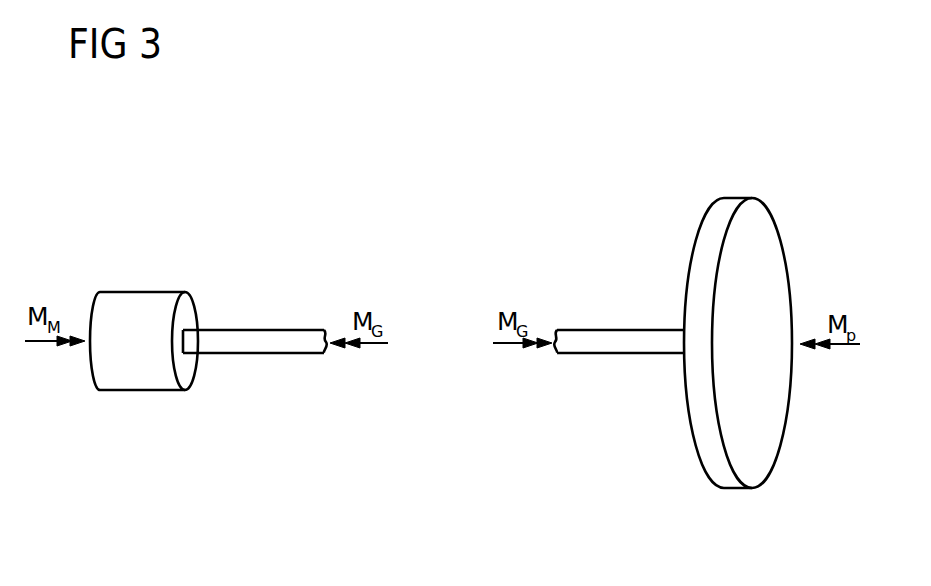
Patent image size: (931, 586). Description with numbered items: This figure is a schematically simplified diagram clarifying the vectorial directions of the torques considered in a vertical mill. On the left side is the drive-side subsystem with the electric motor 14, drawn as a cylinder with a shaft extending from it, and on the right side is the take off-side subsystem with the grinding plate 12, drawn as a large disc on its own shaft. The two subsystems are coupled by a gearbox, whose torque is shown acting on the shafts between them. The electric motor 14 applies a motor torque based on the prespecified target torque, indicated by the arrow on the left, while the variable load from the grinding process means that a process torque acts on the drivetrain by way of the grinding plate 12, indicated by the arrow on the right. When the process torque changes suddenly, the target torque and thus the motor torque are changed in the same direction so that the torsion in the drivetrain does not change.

The grinding plate 12 is at (722, 475).
The electric motor 14 is at (140, 372).